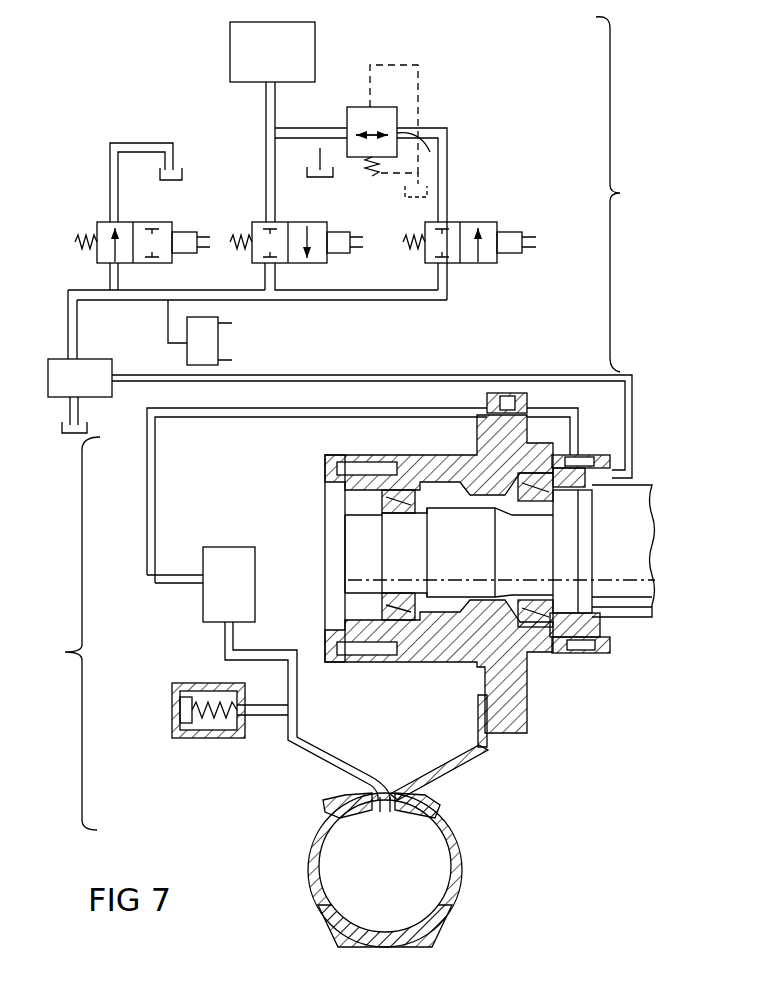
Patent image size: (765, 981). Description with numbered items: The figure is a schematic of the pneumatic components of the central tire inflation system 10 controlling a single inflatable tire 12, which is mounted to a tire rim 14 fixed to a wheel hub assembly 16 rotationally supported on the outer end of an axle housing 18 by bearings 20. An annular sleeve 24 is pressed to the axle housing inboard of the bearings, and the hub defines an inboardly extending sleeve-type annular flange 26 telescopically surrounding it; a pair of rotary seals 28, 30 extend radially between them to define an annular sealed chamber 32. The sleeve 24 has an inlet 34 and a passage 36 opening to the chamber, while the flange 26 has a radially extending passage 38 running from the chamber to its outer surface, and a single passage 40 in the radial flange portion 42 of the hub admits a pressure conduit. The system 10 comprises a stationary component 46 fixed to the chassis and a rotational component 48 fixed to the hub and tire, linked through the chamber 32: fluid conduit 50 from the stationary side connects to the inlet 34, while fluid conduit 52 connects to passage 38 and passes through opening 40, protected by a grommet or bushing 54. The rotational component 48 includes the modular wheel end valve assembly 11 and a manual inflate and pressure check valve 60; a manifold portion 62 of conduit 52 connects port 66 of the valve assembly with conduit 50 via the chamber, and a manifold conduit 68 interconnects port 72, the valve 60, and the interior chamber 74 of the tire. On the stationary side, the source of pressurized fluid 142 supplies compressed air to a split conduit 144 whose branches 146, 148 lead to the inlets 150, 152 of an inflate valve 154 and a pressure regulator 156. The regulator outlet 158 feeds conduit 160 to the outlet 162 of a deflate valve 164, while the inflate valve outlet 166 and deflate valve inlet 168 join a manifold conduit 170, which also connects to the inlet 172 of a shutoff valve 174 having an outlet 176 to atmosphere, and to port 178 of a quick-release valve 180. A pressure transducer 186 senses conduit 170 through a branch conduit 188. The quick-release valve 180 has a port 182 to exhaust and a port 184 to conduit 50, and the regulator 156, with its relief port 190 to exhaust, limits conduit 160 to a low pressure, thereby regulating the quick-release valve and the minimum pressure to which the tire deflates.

The central tire inflation system 10 is at (548, 363).
The modular wheel end valve assembly 11 is at (226, 545).
The inflatable tire 12 is at (455, 850).
The tire rim 14 is at (325, 805).
The wheel hub assembly 16 is at (425, 657).
The axle housing 18 is at (624, 612).
The bearings 20 is at (538, 595).
The annular sleeve 24 is at (578, 610).
The sleeve-type annular flange 26 is at (598, 662).
The rotary seal 28 is at (558, 640).
The rotary seal 30 is at (608, 650).
The annular sealed chamber 32 is at (585, 652).
The inlet 34 is at (600, 483).
The passage 36 is at (604, 498).
The radially extending passage 38 is at (577, 456).
The passage 40 is at (478, 428).
The radial flange portion 42 is at (490, 712).
The stationary component 46 is at (625, 194).
The rotational component 48 is at (64, 633).
The fluid conduit 50 is at (450, 372).
The fluid conduit 52 is at (550, 392).
The grommet or bushing 54 is at (487, 401).
The manual inflate and pressure check valve 60 is at (170, 710).
The manifold portion 62 is at (146, 517).
The port 66 is at (197, 585).
The manifold conduit 68 is at (300, 680).
The port 72 is at (236, 624).
The interior chamber 74 is at (400, 879).
The air source 142 is at (228, 50).
The split conduit 144 is at (264, 104).
The branch 146 is at (264, 152).
The branch 148 is at (304, 128).
The inlet 150 is at (262, 218).
The inlet 152 is at (350, 128).
The inflate valve 154 is at (315, 220).
The pressure regulator 156 is at (433, 80).
The outlet 158 is at (416, 154).
The conduit 160 is at (448, 149).
The outlet 162 is at (447, 218).
The deflate valve 164 is at (480, 268).
The outlet 166 is at (252, 272).
The inlet 168 is at (432, 267).
The manifold conduit 170 is at (355, 301).
The inlet 172 is at (108, 275).
The shutoff valve 174 is at (145, 220).
The outlet 176 is at (112, 218).
The port 178 is at (72, 357).
The quick-release valve 180 is at (99, 400).
The port 182 is at (68, 405).
The port 184 is at (113, 378).
The pressure transducer 186 is at (224, 342).
The branch conduit 188 is at (166, 330).
The relief port 190 is at (345, 148).